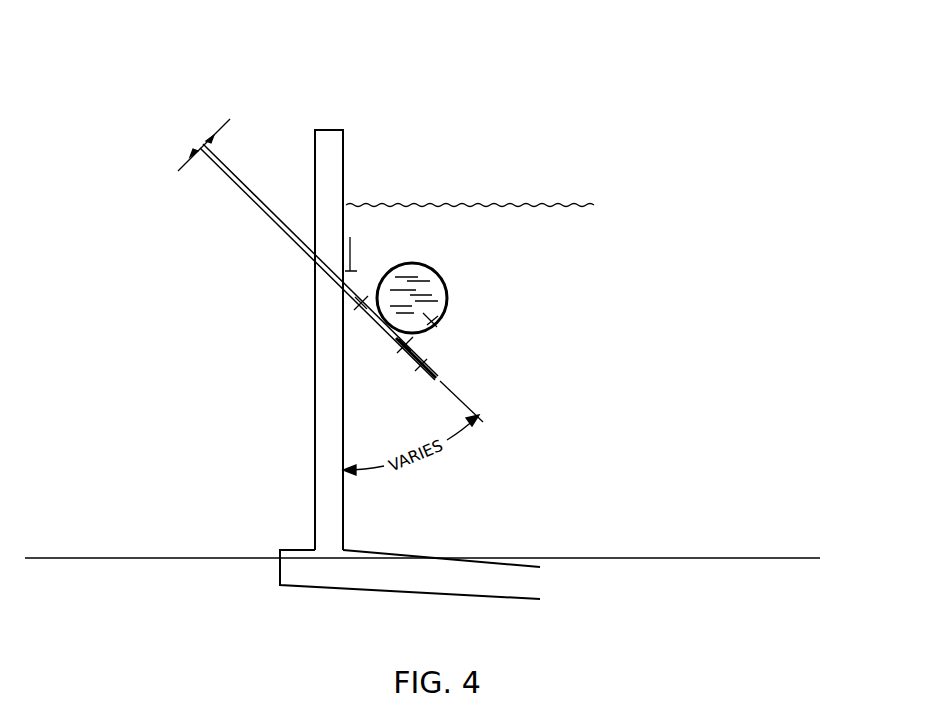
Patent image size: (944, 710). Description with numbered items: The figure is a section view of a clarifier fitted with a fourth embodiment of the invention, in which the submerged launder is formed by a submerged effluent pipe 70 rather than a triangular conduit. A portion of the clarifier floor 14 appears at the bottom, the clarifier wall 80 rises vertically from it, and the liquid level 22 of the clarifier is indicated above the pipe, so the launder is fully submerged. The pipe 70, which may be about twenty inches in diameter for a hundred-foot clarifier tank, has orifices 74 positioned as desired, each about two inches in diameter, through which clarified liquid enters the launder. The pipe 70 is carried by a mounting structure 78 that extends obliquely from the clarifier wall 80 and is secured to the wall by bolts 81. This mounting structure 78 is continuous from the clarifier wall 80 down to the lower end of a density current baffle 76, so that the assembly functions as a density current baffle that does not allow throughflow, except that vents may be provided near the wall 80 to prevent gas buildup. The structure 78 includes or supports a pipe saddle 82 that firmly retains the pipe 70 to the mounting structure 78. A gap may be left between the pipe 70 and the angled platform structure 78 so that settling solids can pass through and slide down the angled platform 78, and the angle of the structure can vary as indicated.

The clarifier floor 14 is at (438, 557).
The liquid level 22 is at (397, 205).
The submerged effluent pipe 70 is at (383, 266).
The orifices 74 is at (440, 323).
The density current baffle 76 is at (425, 355).
The mounting structure 78 is at (365, 316).
The clarifier wall 80 is at (347, 153).
The bolts 81 is at (350, 237).
The pipe saddle 82 is at (361, 303).